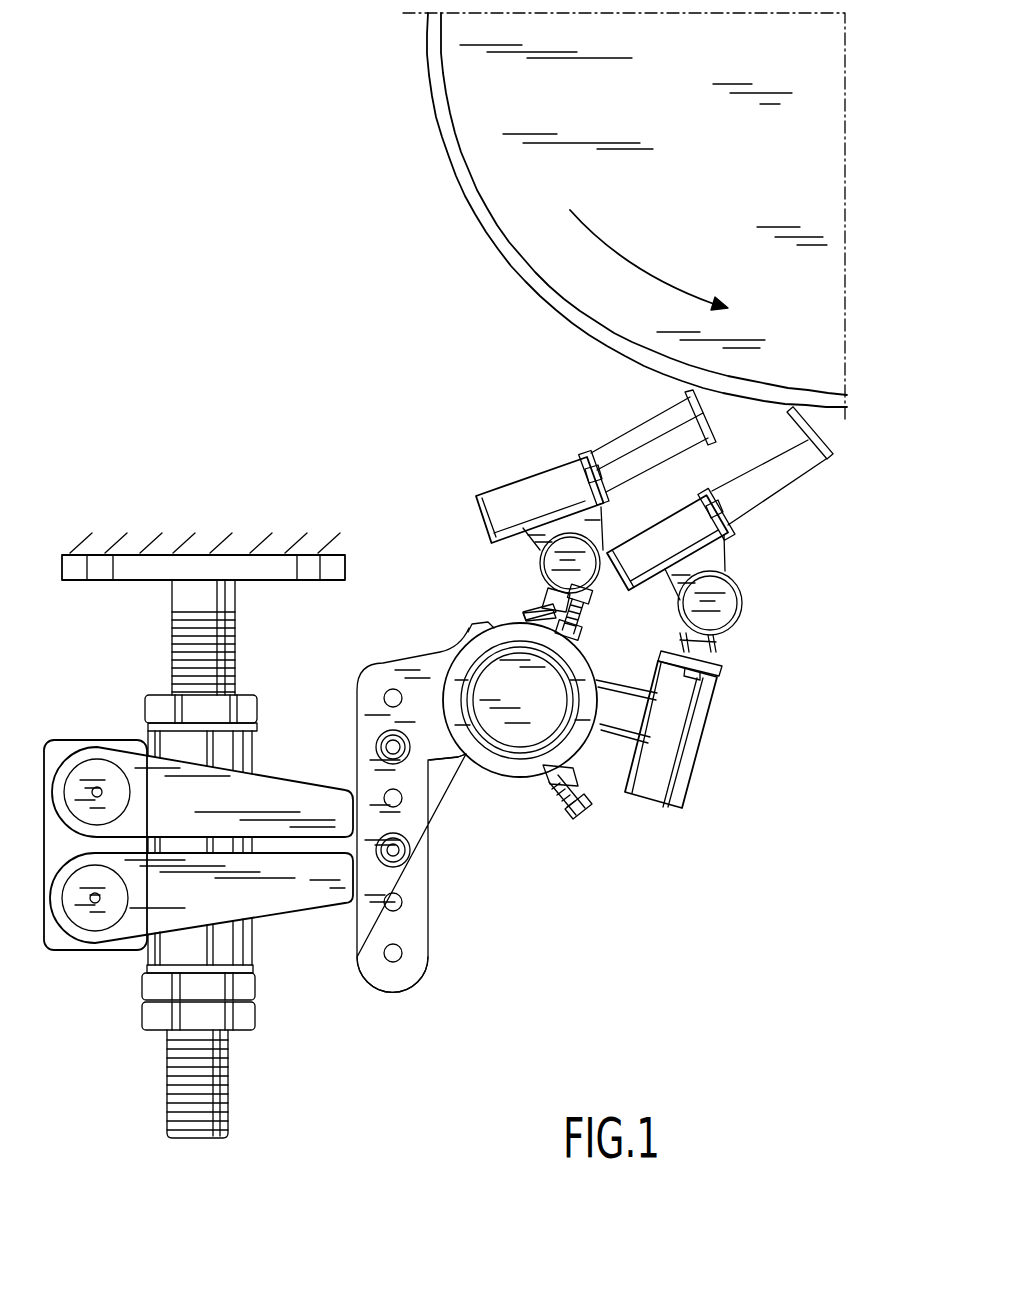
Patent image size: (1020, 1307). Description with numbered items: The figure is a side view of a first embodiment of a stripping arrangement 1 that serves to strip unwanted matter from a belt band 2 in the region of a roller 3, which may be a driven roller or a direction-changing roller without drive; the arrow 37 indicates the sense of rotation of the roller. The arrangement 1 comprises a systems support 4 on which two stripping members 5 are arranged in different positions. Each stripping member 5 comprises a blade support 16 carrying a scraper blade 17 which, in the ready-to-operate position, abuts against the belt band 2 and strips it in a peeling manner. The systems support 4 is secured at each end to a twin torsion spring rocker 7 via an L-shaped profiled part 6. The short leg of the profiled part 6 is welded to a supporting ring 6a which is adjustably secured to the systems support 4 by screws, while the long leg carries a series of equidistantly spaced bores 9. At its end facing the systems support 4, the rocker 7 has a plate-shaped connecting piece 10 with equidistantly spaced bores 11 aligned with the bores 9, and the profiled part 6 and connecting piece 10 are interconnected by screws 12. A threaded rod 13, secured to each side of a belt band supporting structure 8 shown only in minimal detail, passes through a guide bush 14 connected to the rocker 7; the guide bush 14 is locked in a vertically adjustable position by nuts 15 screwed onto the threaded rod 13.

The arrangement 1 is at (597, 682).
The belt band 2 is at (452, 148).
The roller 3 is at (478, 107).
The direction of rotation 37 is at (626, 252).
The systems support 4 is at (473, 623).
The stripping member 5 is at (492, 463).
The L-shaped profiled part 6 is at (445, 770).
The supporting ring 6a is at (498, 763).
The twin torsion spring rocker 7 is at (62, 965).
The belt band supporting structure 8 is at (253, 553).
The bores 9 is at (392, 697).
The connecting piece 10 is at (402, 977).
The bores 11 is at (395, 950).
The screws 12 is at (390, 747).
The threaded rod 13 is at (203, 1068).
The guide bush 14 is at (227, 955).
The nuts 15 is at (200, 710).
The blade support 16 is at (597, 435).
The scraper blade 17 is at (695, 410).